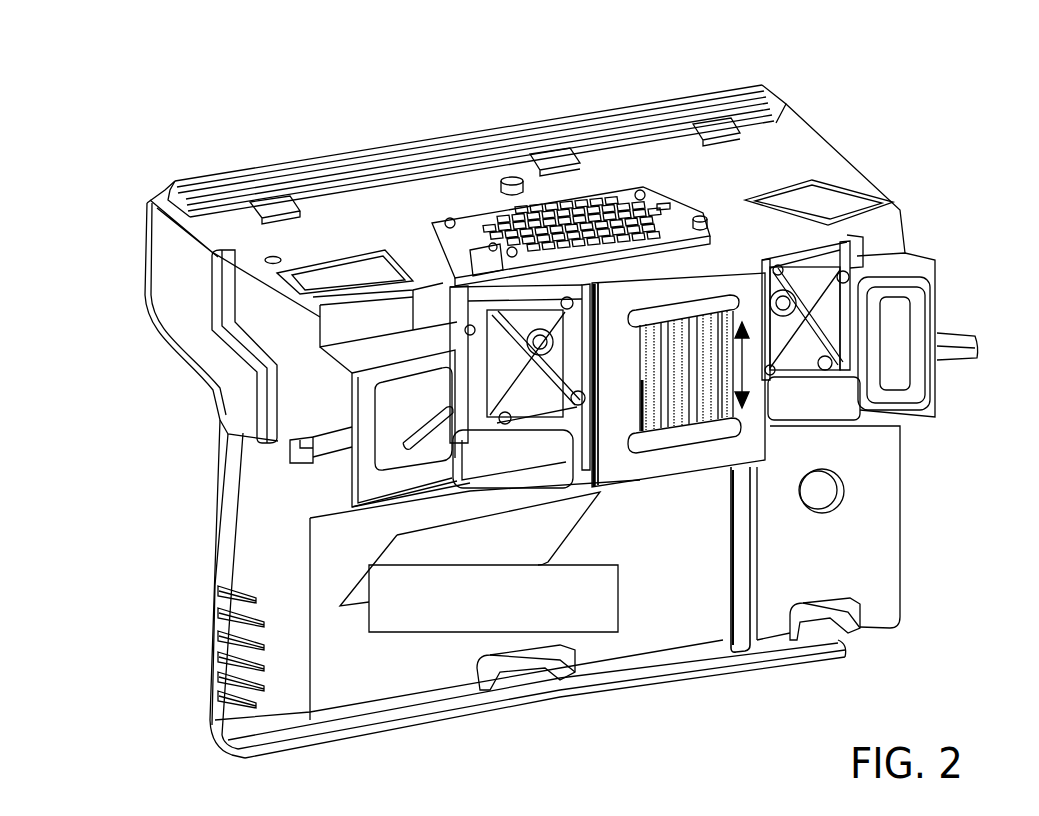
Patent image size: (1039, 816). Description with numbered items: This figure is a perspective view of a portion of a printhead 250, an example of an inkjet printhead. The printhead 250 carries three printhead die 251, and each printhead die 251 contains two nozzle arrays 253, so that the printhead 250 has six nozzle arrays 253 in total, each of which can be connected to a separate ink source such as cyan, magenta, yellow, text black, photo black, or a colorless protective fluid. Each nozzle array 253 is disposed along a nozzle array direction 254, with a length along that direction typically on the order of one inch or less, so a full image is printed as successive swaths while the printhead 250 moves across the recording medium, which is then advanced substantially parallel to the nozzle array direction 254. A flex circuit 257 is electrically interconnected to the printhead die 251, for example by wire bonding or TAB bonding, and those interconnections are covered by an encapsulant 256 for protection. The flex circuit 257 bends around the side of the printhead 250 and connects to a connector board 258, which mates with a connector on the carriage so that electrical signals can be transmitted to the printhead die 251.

The printhead 250 is at (267, 500).
The printhead die 251 is at (652, 362).
The nozzle array 253 is at (657, 383).
The nozzle array direction 254 is at (742, 362).
The encapsulant 256 is at (705, 428).
The flex circuit 257 is at (630, 462).
The connector board 258 is at (590, 215).